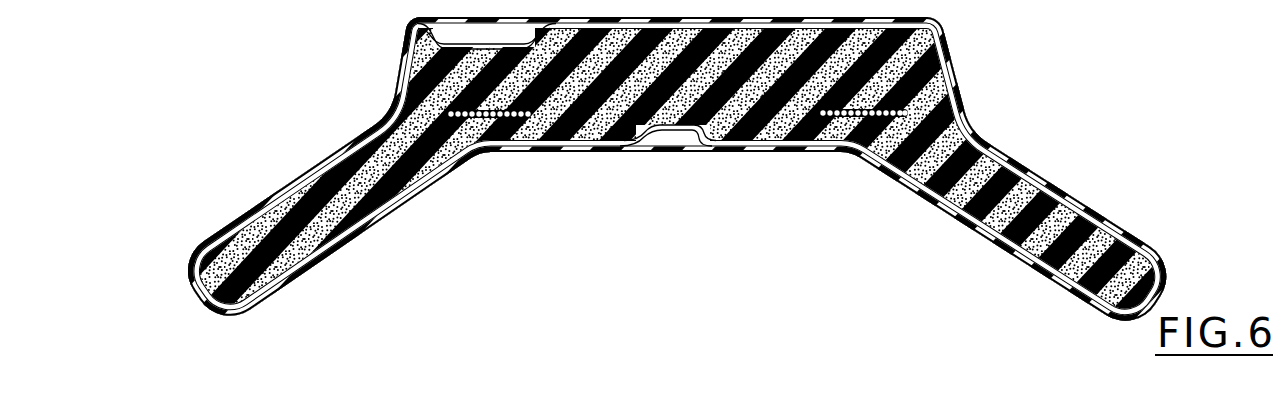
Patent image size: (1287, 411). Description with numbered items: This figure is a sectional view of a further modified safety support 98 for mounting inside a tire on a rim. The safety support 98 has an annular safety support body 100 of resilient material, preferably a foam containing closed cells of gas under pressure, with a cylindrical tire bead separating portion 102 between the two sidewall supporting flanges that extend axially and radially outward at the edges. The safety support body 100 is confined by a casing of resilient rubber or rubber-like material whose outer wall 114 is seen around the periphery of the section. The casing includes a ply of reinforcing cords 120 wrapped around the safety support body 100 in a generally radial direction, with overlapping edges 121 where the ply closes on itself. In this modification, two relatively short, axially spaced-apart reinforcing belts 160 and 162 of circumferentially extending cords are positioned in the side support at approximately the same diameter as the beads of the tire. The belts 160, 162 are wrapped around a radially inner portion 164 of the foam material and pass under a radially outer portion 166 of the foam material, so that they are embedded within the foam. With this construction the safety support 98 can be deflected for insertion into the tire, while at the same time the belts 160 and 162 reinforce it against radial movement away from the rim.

The safety support 98 is at (703, 175).
The safety support body 100 is at (913, 183).
The tire bead separating portion 102 is at (634, 143).
The outer wall 114 is at (717, 154).
The reinforcing cords 120 is at (780, 143).
The overlapping edges 121 is at (702, 135).
The reinforcing belt 160 is at (476, 123).
The reinforcing belt 162 is at (850, 120).
The radially inner portion 164 is at (527, 87).
The radially outer portion 166 is at (507, 125).